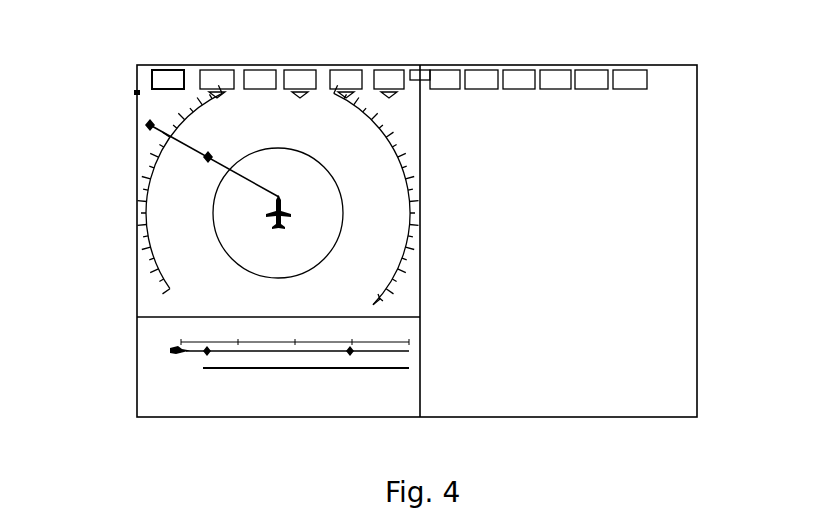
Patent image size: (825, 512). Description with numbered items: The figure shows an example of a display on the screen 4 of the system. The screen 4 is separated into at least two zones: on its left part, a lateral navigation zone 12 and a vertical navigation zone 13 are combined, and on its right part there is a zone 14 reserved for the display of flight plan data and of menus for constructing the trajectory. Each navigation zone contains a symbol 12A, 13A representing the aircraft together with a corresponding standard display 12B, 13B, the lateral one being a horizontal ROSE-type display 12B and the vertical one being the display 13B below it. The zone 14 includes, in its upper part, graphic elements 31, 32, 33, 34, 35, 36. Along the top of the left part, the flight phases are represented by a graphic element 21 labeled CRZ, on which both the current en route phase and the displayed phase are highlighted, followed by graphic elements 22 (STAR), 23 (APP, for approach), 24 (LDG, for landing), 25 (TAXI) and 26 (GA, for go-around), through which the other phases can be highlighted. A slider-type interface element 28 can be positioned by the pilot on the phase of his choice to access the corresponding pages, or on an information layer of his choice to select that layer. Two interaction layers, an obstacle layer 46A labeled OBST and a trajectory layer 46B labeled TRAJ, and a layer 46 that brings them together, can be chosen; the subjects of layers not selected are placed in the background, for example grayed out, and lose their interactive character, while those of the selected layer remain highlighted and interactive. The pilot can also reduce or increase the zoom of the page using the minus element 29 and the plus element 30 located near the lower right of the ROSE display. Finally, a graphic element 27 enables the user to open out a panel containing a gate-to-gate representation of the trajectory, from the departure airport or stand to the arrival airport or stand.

The screen 4 is at (430, 418).
The lateral navigation zone 12 is at (178, 183).
The symbol 12A is at (265, 213).
The standard display 12B is at (160, 135).
The vertical navigation zone 13 is at (222, 396).
The symbol 13A is at (182, 358).
The standard display 13B is at (243, 400).
The zone 14 is at (648, 196).
The graphic element 21 is at (168, 70).
The graphic element 22 is at (217, 70).
The graphic element 23 is at (260, 70).
The graphic element 24 is at (300, 70).
The graphic element 25 is at (346, 70).
The graphic element 26 is at (389, 70).
The graphic element 27 is at (419, 70).
The interface element 28 is at (134, 93).
The element 29 is at (386, 302).
The element 30 is at (409, 302).
The graphic element 31 is at (446, 70).
The graphic element 32 is at (483, 70).
The graphic element 33 is at (519, 70).
The graphic element 34 is at (556, 70).
The graphic element 35 is at (592, 70).
The graphic element 36 is at (630, 70).
The layer 46 is at (216, 314).
The obstacle layer 46A is at (140, 311).
The trajectory layer 46B is at (205, 292).